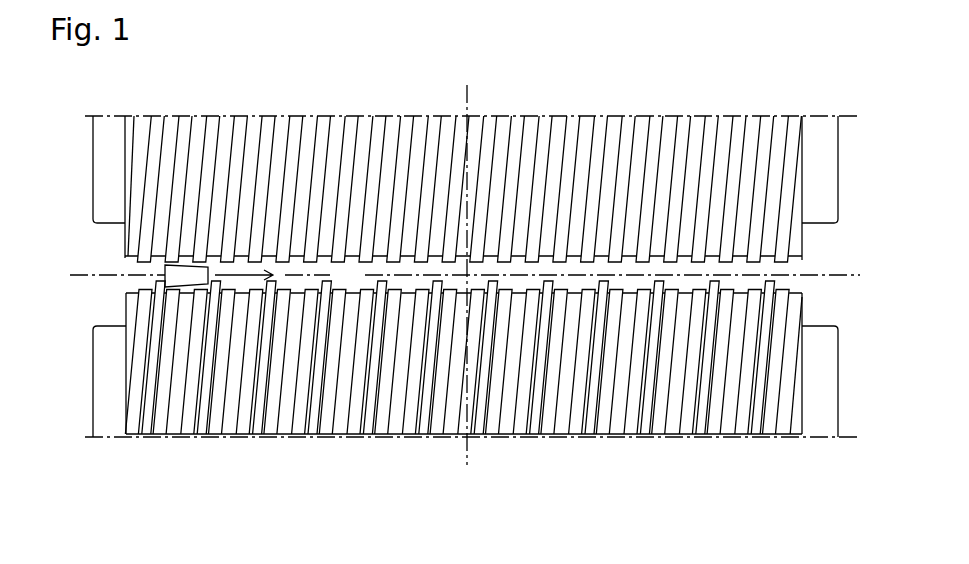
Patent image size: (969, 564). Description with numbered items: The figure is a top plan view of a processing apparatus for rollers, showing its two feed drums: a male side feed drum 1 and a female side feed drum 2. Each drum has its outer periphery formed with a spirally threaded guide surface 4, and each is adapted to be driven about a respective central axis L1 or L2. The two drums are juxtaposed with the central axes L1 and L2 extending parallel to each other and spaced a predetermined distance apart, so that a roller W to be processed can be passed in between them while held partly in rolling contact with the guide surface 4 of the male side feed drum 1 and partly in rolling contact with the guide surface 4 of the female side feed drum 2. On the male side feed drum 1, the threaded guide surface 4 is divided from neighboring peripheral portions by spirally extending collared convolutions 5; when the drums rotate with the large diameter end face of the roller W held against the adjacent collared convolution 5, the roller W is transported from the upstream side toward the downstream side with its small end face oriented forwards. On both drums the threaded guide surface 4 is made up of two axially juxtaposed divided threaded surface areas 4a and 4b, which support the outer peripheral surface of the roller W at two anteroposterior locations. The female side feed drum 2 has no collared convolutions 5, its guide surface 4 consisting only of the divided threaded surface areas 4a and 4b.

The male side feed drum 1 is at (108, 420).
The female side feed drum 2 is at (113, 143).
The spirally threaded guide surface 4 is at (463, 281).
The divided threaded surface area 4a is at (268, 130).
The divided threaded surface area 4b is at (245, 130).
The collared convolutions 5 is at (206, 378).
The roller W is at (175, 271).
The central axis L1 is at (809, 440).
The central axis L2 is at (779, 117).